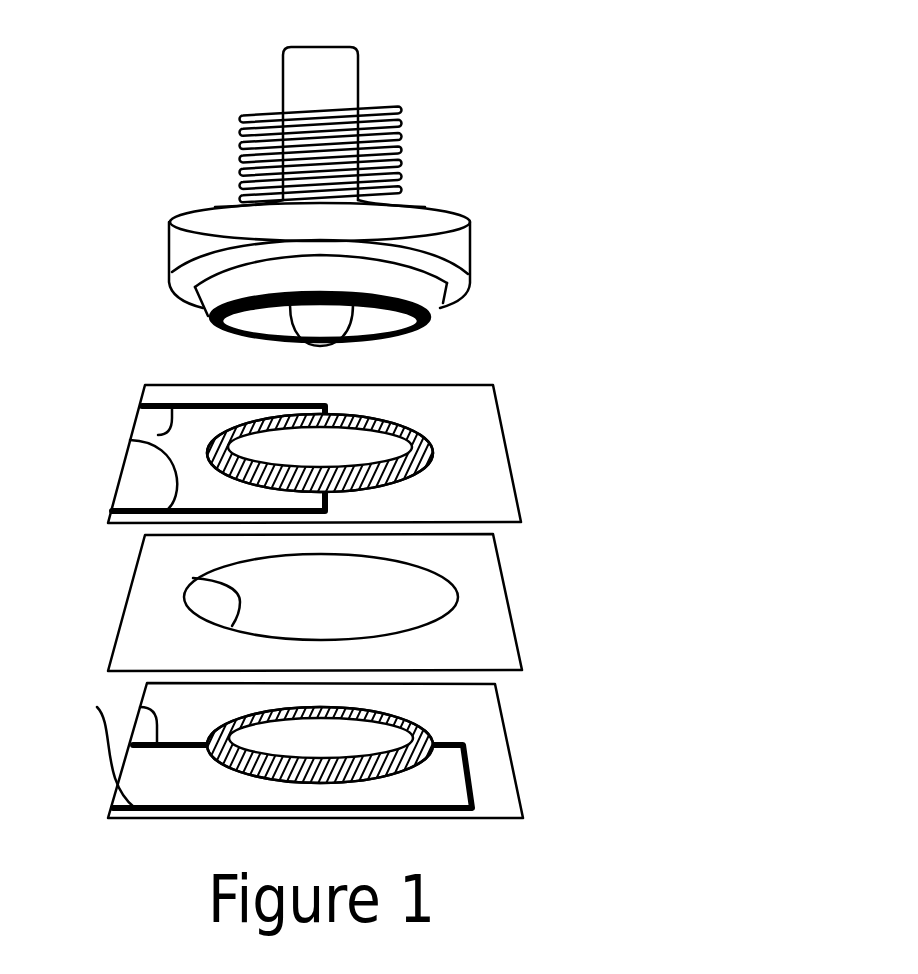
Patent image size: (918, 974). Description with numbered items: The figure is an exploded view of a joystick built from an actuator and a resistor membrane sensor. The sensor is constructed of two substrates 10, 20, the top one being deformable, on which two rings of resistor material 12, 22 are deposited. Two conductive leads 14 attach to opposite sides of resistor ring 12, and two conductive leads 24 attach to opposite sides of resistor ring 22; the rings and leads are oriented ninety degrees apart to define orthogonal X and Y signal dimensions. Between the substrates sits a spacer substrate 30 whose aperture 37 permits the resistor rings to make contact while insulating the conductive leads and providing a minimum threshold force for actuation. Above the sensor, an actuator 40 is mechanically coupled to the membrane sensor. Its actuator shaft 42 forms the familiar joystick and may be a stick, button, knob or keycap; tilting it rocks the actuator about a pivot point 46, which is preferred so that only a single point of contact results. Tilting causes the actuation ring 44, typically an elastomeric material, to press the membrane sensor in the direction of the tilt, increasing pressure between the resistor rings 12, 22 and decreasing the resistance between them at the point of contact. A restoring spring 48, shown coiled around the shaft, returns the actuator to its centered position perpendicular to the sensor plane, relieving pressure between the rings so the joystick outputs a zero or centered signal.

The substrate 10 is at (468, 493).
The resistor ring 12 is at (390, 427).
The conductive leads 14 is at (158, 435).
The substrate 20 is at (488, 790).
The resistor ring 22 is at (390, 712).
The conductive leads 24 is at (140, 707).
The spacer substrate 30 is at (475, 637).
The aperture 37 is at (193, 578).
The actuator 40 is at (445, 240).
The actuator shaft 42 is at (342, 78).
The actuation ring 44 is at (423, 330).
The pivot point 46 is at (328, 335).
The restoring spring 48 is at (395, 140).